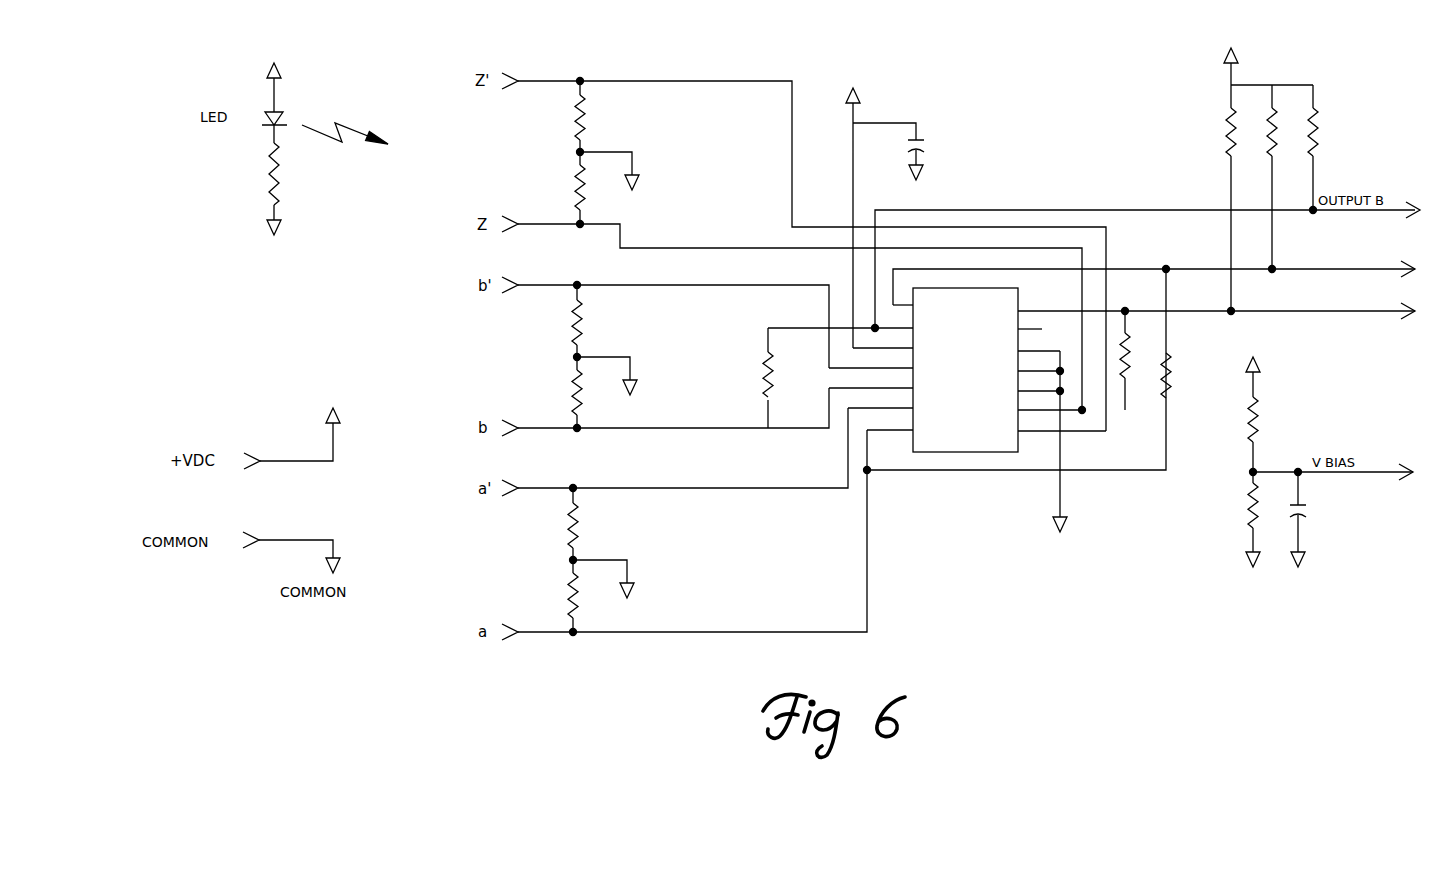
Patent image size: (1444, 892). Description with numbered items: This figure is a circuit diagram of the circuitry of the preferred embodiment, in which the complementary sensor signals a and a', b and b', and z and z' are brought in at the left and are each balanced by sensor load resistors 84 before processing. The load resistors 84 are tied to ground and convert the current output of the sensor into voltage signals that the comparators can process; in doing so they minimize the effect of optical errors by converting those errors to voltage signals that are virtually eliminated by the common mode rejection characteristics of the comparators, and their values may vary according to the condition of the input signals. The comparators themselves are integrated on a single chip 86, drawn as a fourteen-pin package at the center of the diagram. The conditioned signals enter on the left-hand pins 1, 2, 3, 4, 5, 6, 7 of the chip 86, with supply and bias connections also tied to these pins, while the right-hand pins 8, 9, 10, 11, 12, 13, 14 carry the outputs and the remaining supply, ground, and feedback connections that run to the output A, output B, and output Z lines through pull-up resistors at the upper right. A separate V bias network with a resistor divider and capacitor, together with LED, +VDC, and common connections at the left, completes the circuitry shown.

The sensor load resistors 84 is at (612, 117).
The single chip 86 is at (1122, 350).
The IC pin 1 is at (903, 298).
The IC pin 2 is at (894, 321).
The IC pin 3 is at (883, 341).
The IC pin 4 is at (871, 361).
The IC pin 5 is at (871, 381).
The IC pin 6 is at (880, 401).
The IC pin 7 is at (890, 423).
The IC pin 8 is at (1062, 424).
The IC pin 9 is at (1050, 403).
The IC pin 10 is at (1039, 383).
The IC pin 11 is at (1039, 363).
The IC pin 12 is at (1039, 343).
The IC pin 13 is at (1030, 322).
The IC pin 14 is at (1071, 303).